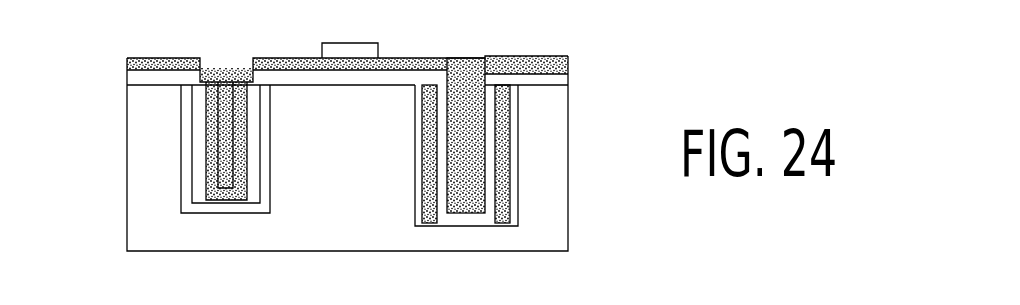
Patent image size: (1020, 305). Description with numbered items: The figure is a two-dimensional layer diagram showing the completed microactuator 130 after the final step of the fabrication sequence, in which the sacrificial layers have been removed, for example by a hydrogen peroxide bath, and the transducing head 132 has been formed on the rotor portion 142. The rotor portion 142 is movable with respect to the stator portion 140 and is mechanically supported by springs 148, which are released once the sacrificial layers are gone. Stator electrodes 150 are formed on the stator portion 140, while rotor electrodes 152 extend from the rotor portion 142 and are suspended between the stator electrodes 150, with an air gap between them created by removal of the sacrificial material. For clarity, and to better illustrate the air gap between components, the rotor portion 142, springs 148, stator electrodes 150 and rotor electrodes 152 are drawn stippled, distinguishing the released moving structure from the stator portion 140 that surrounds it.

The microactuator 130 is at (608, 232).
The transducing head 132 is at (355, 46).
The stator portion 140 is at (278, 247).
The rotor portion 142 is at (155, 58).
The springs 148 is at (238, 117).
The stator electrodes 150 is at (432, 223).
The rotor electrodes 152 is at (470, 207).